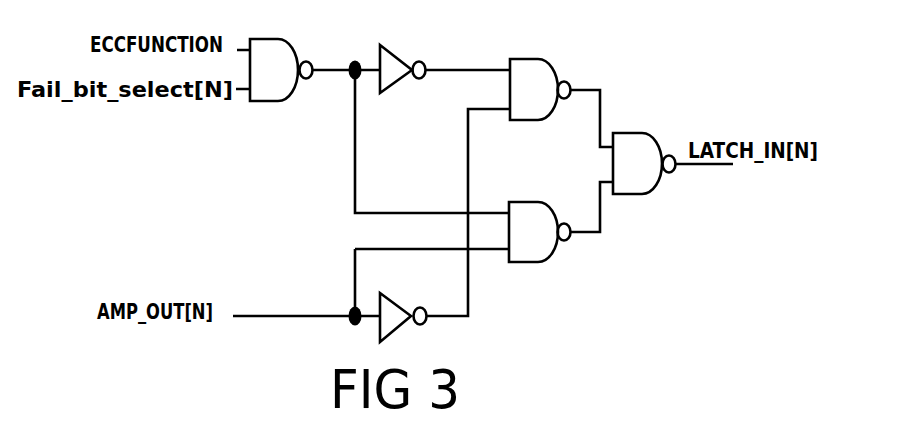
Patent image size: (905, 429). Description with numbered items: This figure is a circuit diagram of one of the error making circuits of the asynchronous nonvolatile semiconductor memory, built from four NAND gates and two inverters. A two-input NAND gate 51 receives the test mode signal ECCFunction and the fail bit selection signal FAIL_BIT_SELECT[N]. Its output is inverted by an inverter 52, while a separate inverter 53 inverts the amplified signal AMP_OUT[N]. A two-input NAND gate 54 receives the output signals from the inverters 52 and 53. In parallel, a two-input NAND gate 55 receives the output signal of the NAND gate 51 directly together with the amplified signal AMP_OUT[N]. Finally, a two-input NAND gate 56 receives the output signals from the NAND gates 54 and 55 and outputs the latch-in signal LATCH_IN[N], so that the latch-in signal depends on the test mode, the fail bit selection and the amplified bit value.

The two-input NAND gate 51 is at (287, 52).
The inverter 52 is at (393, 60).
The inverter 53 is at (393, 315).
The two-input NAND gate 54 is at (542, 77).
The two-input NAND gate 55 is at (535, 222).
The two-input NAND gate 56 is at (647, 152).